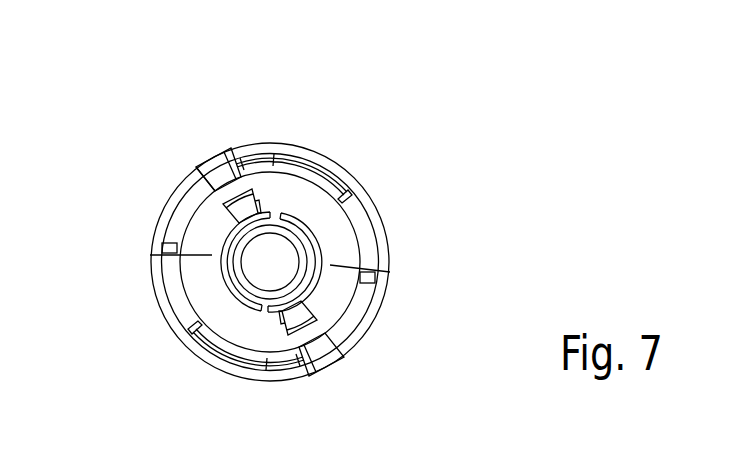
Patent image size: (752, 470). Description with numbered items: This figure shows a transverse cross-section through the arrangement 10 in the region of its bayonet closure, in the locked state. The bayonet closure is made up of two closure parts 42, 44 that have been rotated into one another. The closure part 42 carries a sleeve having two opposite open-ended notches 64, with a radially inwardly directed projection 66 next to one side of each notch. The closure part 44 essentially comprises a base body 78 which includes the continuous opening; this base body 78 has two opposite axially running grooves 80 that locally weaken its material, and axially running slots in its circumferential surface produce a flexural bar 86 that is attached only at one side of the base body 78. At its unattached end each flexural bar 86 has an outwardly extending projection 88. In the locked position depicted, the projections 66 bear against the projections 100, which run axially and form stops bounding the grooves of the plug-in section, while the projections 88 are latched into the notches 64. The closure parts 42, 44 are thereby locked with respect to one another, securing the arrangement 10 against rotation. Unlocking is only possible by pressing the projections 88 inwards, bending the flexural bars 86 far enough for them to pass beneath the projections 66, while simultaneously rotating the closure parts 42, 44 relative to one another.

The arrangement 10 is at (437, 157).
The closure part 42 is at (373, 223).
The closure part 44 is at (342, 255).
The notch 64 is at (198, 167).
The projection 66 is at (183, 208).
The base body 78 is at (298, 202).
The groove 80 is at (253, 203).
The flexural bar 86 is at (240, 192).
The projection 88 is at (213, 157).
The projection 100 is at (152, 250).